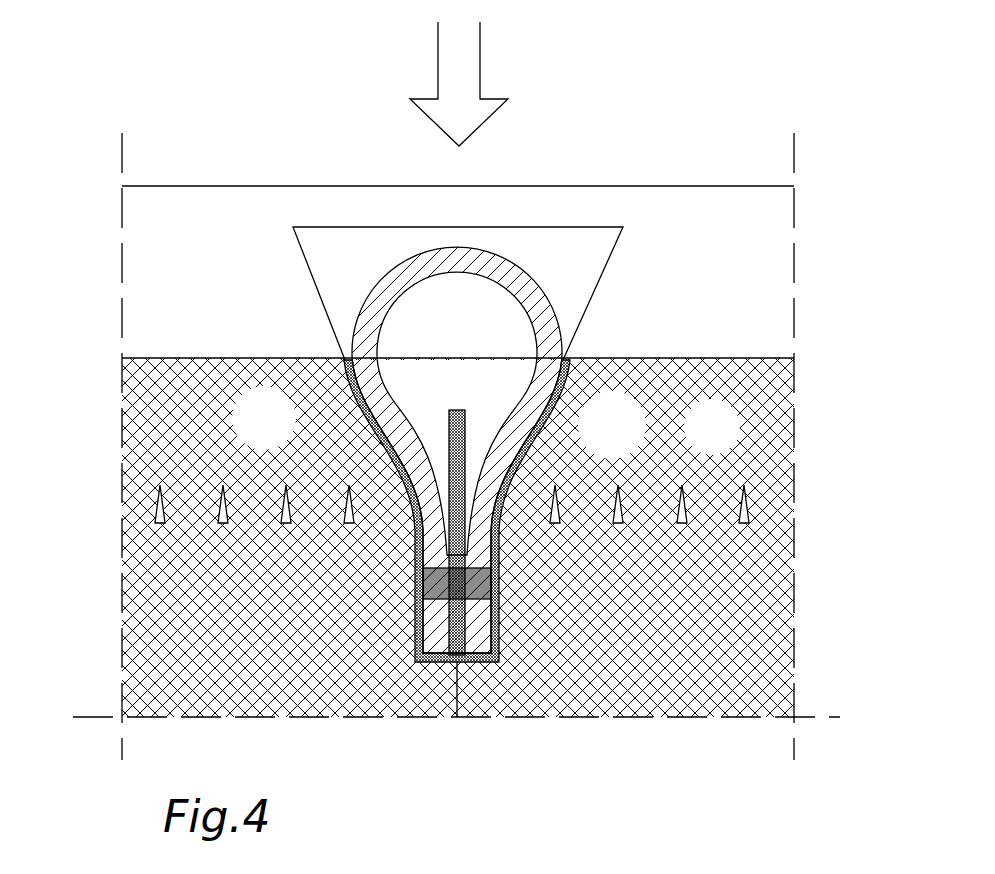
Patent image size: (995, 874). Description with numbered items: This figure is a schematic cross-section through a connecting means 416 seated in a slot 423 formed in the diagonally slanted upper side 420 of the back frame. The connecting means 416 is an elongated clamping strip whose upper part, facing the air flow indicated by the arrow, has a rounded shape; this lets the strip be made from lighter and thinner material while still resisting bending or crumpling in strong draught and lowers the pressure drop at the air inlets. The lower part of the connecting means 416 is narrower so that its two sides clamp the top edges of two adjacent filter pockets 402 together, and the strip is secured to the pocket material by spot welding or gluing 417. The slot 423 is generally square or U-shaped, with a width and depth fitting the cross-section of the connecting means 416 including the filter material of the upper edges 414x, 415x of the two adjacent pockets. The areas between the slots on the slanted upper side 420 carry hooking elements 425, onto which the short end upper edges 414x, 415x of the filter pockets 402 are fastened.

The filter pockets 402 is at (177, 645).
The upper edge of filter pocket material 414x is at (285, 397).
The upper edge of filter pocket material 415x is at (639, 402).
The connecting means 416 is at (553, 292).
The spot welding or gluing 417 is at (482, 583).
The diagonally slanted upper side 420 is at (212, 233).
The slot 423 is at (542, 245).
The hooking elements 425 is at (740, 500).